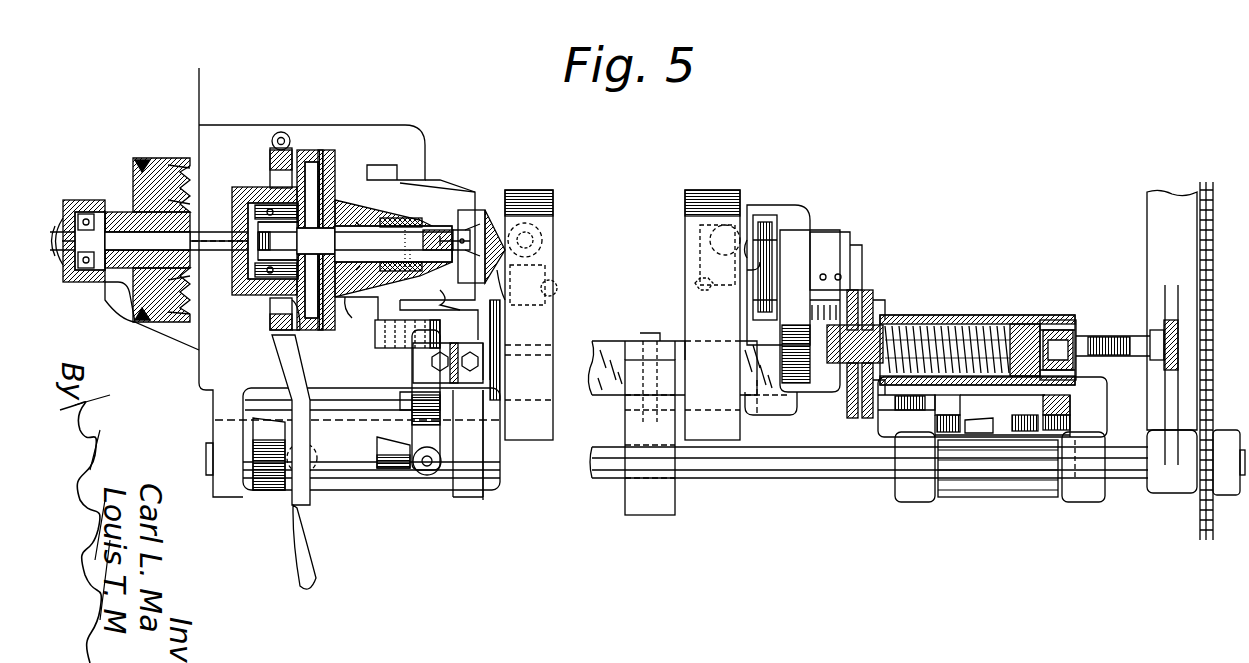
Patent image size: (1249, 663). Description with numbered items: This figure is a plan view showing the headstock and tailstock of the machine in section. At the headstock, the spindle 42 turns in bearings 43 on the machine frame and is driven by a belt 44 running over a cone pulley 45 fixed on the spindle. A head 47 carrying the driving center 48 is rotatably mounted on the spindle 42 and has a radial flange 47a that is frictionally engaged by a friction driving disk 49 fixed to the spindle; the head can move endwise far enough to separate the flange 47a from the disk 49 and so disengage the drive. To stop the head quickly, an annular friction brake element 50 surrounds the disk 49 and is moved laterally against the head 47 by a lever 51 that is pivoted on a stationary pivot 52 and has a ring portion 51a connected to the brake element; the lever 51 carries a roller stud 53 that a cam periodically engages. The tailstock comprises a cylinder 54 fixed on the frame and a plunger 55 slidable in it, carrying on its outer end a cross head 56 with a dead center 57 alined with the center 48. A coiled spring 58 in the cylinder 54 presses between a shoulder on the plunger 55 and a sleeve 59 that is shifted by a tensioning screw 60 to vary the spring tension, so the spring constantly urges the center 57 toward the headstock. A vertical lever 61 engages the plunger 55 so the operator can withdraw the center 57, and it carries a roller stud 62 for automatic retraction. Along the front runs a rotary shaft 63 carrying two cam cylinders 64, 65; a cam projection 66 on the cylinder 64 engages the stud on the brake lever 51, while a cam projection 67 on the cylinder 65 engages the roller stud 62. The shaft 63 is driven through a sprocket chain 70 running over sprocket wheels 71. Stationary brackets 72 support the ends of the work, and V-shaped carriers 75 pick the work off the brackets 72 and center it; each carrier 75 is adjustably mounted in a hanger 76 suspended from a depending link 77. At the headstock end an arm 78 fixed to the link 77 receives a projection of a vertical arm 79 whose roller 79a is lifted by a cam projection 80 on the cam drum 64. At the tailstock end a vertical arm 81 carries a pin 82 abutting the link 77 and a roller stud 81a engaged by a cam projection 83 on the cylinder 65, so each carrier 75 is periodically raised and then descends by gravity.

The spindle 42 is at (205, 230).
The bearings 43 is at (88, 200).
The belt 44 is at (143, 160).
The cone pulley 45 is at (176, 176).
The head 47 is at (340, 300).
The radial flange 47a is at (343, 335).
The driving center 48 is at (480, 222).
The friction driving disk 49 is at (335, 178).
The annular friction brake element 50 is at (298, 322).
The lever 51 is at (294, 541).
The ring portion 51a is at (272, 326).
The stationary pivot 52 is at (286, 133).
The roller stud 53 is at (318, 472).
The cylinder 54 is at (1032, 318).
The plunger 55 is at (878, 326).
The cross head 56 is at (795, 248).
The dead center 57 is at (763, 233).
The coiled spring 58 is at (965, 323).
The sleeve 59 is at (1068, 322).
The tensioning screw 60 is at (1122, 326).
The vertical lever 61 is at (1075, 405).
The roller stud 62 is at (1075, 425).
The rotary shaft 63 is at (770, 479).
The cam cylinder 64 is at (368, 492).
The cam cylinder 65 is at (1000, 494).
The cam projection 66 is at (275, 490).
The cam projection 67 is at (1037, 426).
The sprocket chain 70 is at (1210, 300).
The sprocket wheels 71 is at (1220, 432).
The stationary brackets 72 is at (663, 355).
The V-shaped carriers 75 is at (530, 196).
The hanger 76 is at (497, 298).
The link 77 is at (447, 200).
The arm 78 is at (408, 342).
The vertical arm 79 is at (412, 418).
The roller 79a is at (432, 477).
The cam projection 80 is at (398, 470).
The vertical arm 81 is at (950, 404).
The roller stud 81a is at (938, 426).
The pin 82 is at (888, 416).
The cam projection 83 is at (978, 428).